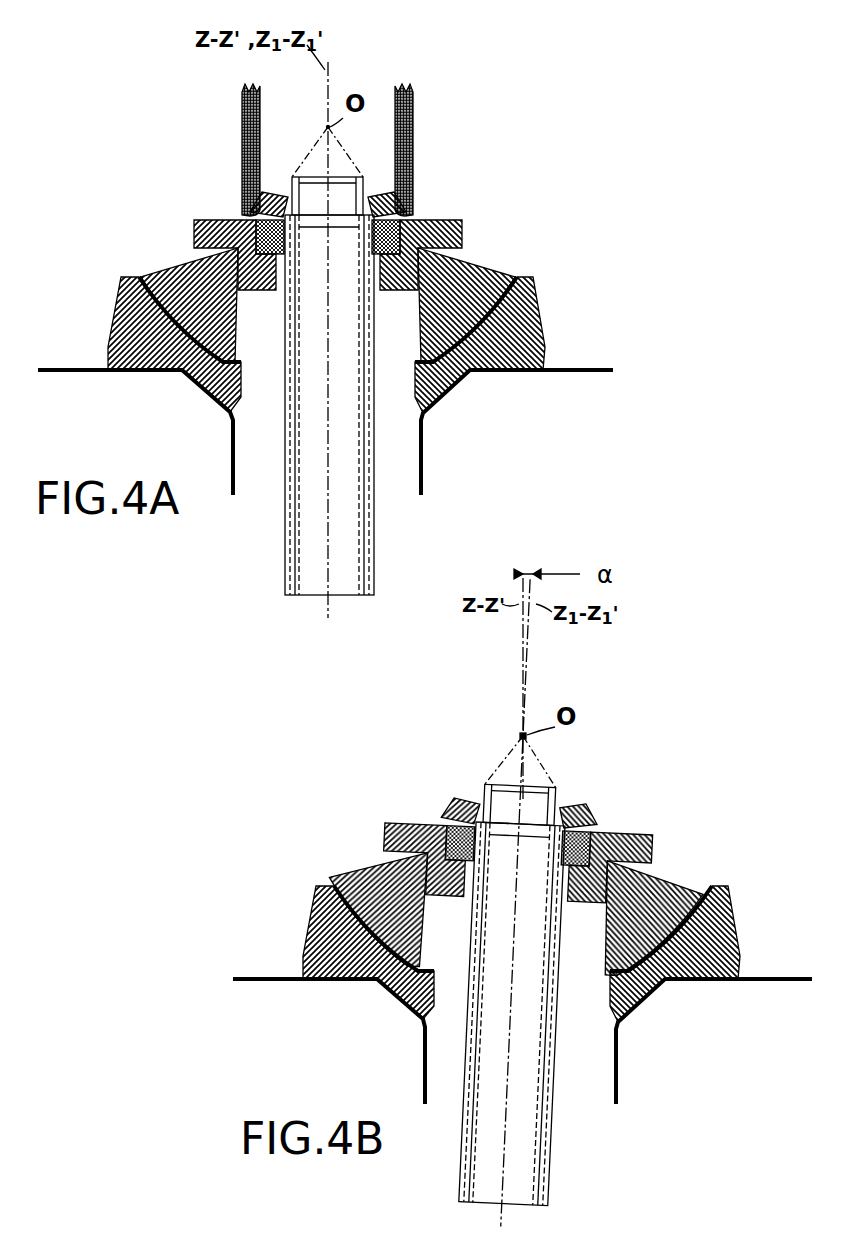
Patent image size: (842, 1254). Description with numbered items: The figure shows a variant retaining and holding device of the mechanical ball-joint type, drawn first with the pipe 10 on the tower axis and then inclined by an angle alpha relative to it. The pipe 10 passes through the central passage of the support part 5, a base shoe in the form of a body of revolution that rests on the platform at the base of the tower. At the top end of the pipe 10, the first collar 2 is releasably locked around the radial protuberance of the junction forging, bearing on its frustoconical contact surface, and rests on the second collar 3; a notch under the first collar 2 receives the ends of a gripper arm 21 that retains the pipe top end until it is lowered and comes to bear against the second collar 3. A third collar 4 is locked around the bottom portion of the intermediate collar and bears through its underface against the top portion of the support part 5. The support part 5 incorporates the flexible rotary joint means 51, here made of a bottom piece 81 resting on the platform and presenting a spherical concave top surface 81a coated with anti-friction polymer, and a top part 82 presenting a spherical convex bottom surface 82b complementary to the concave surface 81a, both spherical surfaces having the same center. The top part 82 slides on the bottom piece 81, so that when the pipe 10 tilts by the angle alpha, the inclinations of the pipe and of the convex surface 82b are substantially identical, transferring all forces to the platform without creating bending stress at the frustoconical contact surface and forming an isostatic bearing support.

In FIG. 4A, the first collar 2 is at (271, 195).
In FIG. 4B, the first collar 2 is at (468, 810).
In FIG. 4A, the second collar 3 is at (407, 212).
In FIG. 4B, the second collar 3 is at (450, 827).
In FIG. 4A, the third collar 4 is at (430, 216).
In FIG. 4B, the third collar 4 is at (407, 825).
In FIG. 4A, the support part 5 is at (340, 301).
In FIG. 4B, the support part 5 is at (344, 924).
In FIG. 4B, the flexible rotary joint means 51 is at (685, 906).
In FIG. 4A, the pipe 10 is at (372, 538).
In FIG. 4B, the pipe 10 is at (548, 1160).
In FIG. 4A, the gripper arm 21 is at (242, 124).
In FIG. 4A, the bottom piece 81 is at (342, 330).
In FIG. 4B, the bottom piece 81 is at (351, 952).
In FIG. 4B, the spherical concave top surface 81a is at (707, 885).
In FIG. 4A, the top part 82 is at (477, 257).
In FIG. 4B, the top part 82 is at (357, 880).
In FIG. 4A, the spherical convex bottom surface 82b is at (163, 270).
In FIG. 4B, the spherical convex bottom surface 82b is at (680, 880).